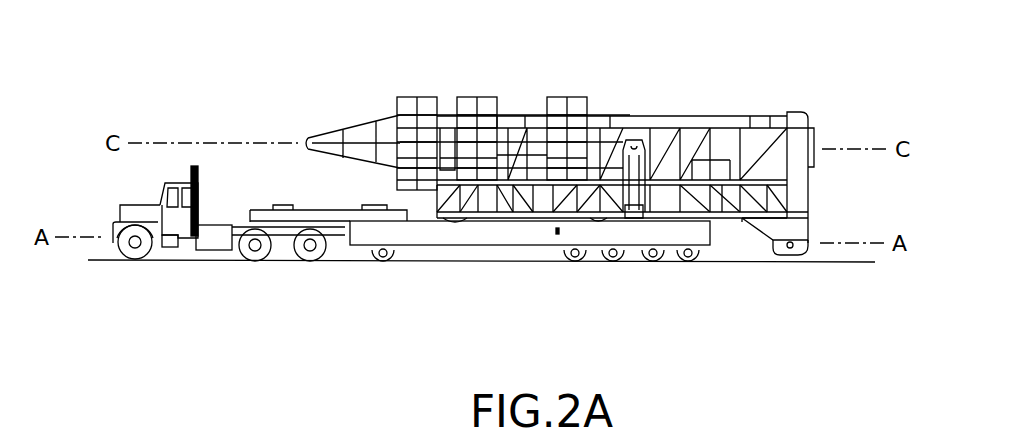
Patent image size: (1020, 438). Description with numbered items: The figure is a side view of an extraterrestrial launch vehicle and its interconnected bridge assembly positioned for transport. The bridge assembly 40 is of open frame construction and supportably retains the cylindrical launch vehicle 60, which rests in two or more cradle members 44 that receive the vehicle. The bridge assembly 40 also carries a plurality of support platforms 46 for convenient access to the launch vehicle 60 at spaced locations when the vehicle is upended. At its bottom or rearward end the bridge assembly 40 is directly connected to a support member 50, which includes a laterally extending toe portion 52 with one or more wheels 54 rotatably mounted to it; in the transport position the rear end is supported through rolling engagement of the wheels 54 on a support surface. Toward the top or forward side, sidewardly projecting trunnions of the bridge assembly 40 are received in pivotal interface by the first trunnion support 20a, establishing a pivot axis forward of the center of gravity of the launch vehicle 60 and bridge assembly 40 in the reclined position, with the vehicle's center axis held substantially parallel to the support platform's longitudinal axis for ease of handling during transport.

The bridge assembly 40 is at (372, 178).
The support platforms 46 is at (480, 97).
The first trunnion support 20a is at (633, 122).
The cylindrical launch vehicle 60 is at (693, 128).
The cradle members 44 is at (724, 136).
The support member 50 is at (796, 190).
The toe portion 52 is at (773, 234).
The wheels 54 is at (793, 258).